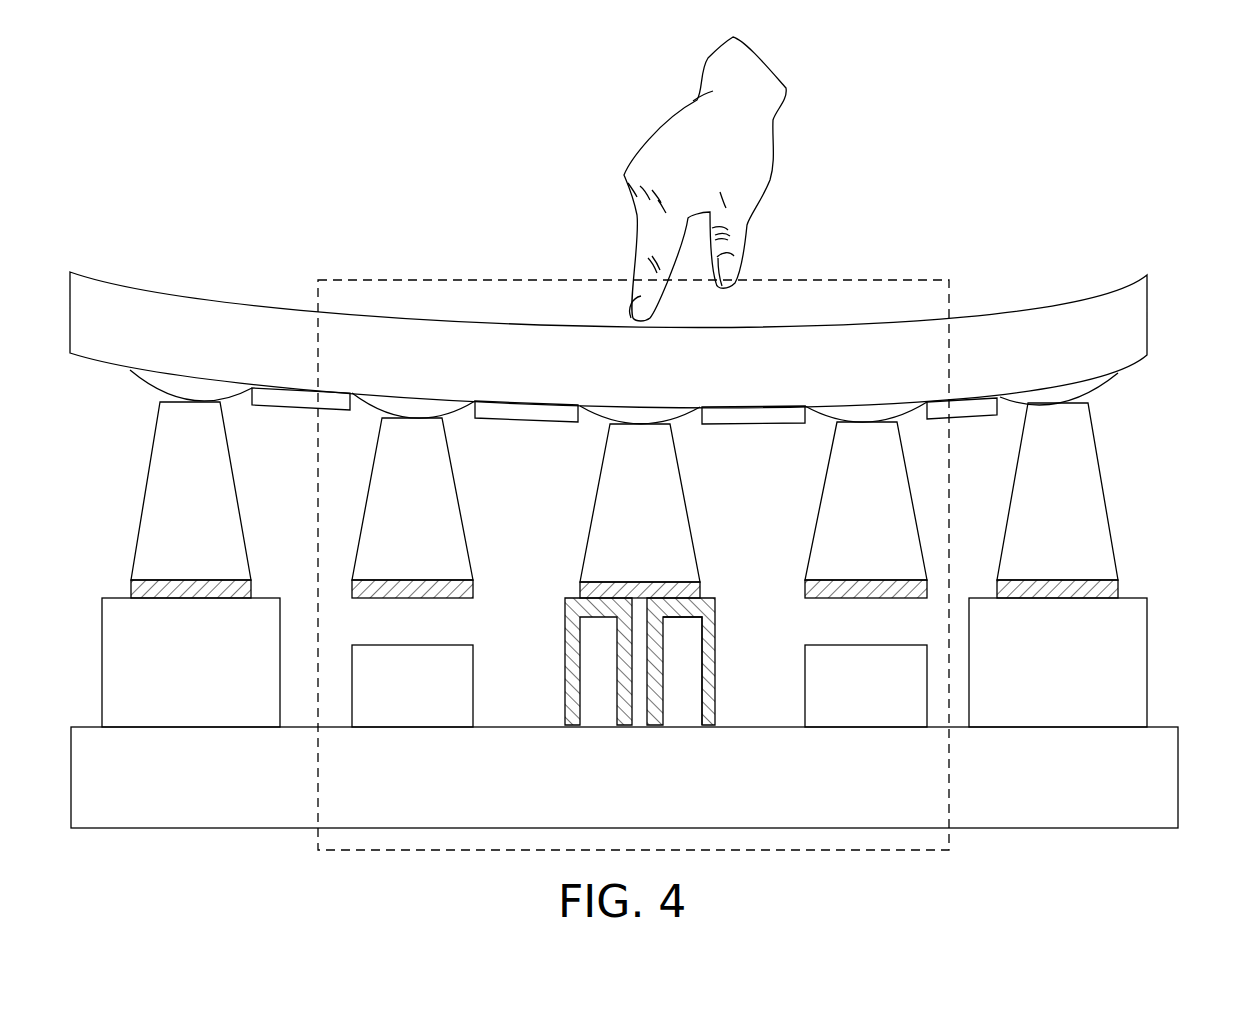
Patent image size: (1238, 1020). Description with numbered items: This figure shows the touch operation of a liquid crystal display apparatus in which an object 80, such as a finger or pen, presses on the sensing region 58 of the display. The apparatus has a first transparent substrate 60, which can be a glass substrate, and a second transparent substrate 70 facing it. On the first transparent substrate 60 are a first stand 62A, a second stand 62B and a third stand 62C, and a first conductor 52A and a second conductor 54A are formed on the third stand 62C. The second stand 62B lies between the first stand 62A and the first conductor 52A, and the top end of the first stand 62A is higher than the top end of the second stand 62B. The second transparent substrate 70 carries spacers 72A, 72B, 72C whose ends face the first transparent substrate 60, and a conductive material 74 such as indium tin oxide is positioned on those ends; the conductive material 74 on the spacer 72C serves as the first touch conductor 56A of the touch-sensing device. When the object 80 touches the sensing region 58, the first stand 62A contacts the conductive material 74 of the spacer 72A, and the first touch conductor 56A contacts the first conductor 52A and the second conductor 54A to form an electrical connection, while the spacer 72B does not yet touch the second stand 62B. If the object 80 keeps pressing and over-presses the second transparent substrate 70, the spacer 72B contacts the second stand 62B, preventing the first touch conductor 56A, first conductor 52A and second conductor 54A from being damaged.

The object 80 is at (770, 103).
The second transparent substrate 70 is at (1137, 315).
The sensing region 58 is at (900, 280).
The spacer 72A is at (624, 475).
The spacer 72B is at (639, 486).
The spacer 72C is at (640, 494).
The conductive material 74 is at (1112, 592).
The first touch conductor 56A is at (702, 590).
The second conductor 54A is at (565, 620).
The first conductor 52A is at (715, 620).
The third stand 62C is at (687, 677).
The first stand 62A is at (624, 662).
The second stand 62B is at (639, 686).
The first transparent substrate 60 is at (1162, 780).